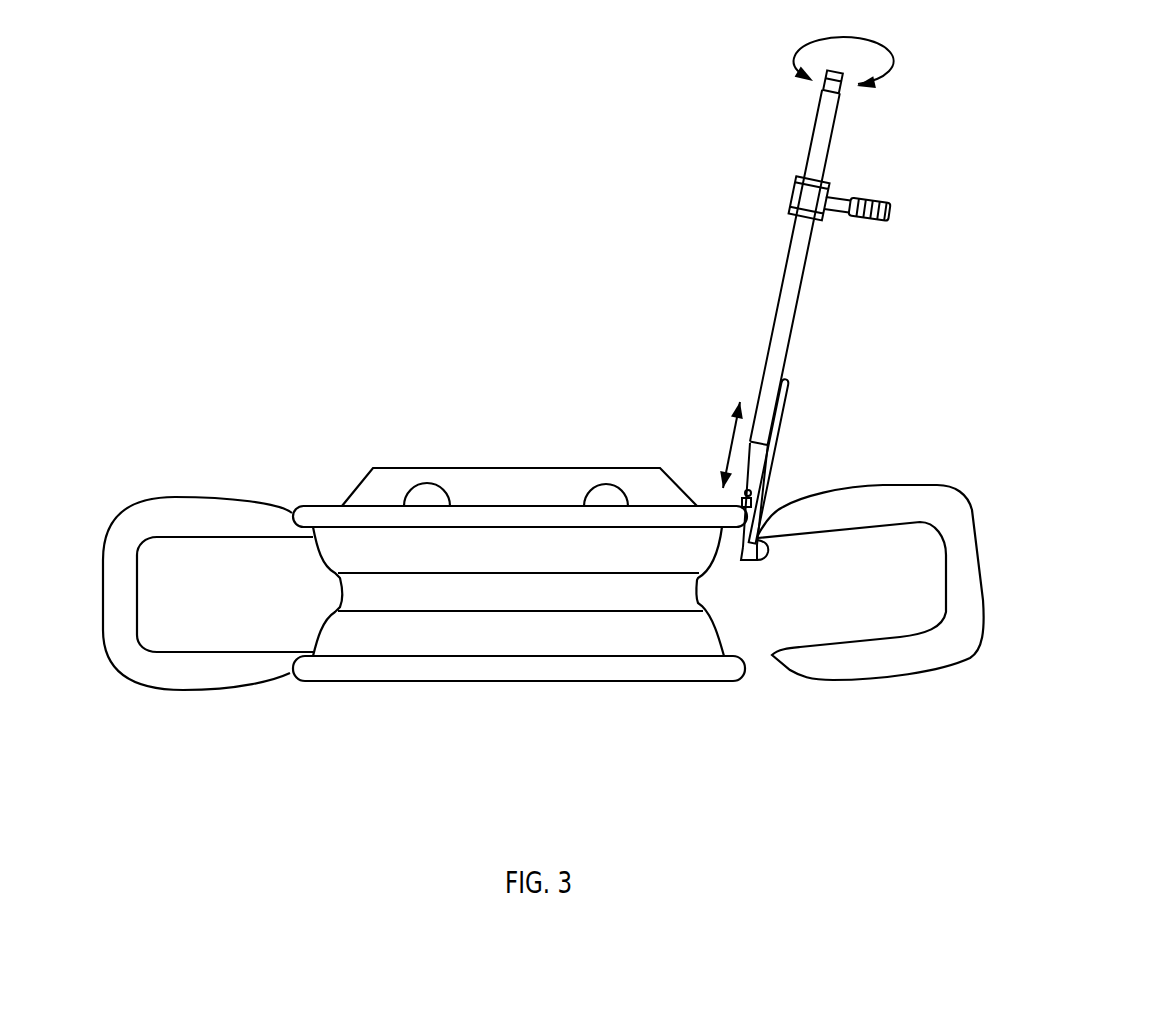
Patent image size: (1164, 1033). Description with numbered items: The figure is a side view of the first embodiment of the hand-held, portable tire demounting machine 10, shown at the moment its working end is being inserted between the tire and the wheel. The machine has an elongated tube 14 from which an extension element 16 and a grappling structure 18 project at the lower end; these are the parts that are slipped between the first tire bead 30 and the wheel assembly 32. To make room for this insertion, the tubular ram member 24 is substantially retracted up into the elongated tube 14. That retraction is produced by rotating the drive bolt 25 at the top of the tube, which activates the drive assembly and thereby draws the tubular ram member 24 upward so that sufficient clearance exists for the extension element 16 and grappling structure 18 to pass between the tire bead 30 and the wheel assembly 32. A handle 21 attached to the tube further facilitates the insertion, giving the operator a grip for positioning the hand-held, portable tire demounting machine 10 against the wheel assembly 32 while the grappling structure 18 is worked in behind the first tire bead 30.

The hand-held, portable tire demounting machine 10 is at (995, 270).
The elongated tube 14 is at (777, 317).
The extension element 16 is at (787, 400).
The grappling structure 18 is at (760, 560).
The handle 21 is at (847, 212).
The tubular ram member 24 is at (745, 468).
The drive bolt 25 is at (843, 77).
The first tire bead 30 is at (787, 538).
The wheel assembly 32 is at (533, 590).